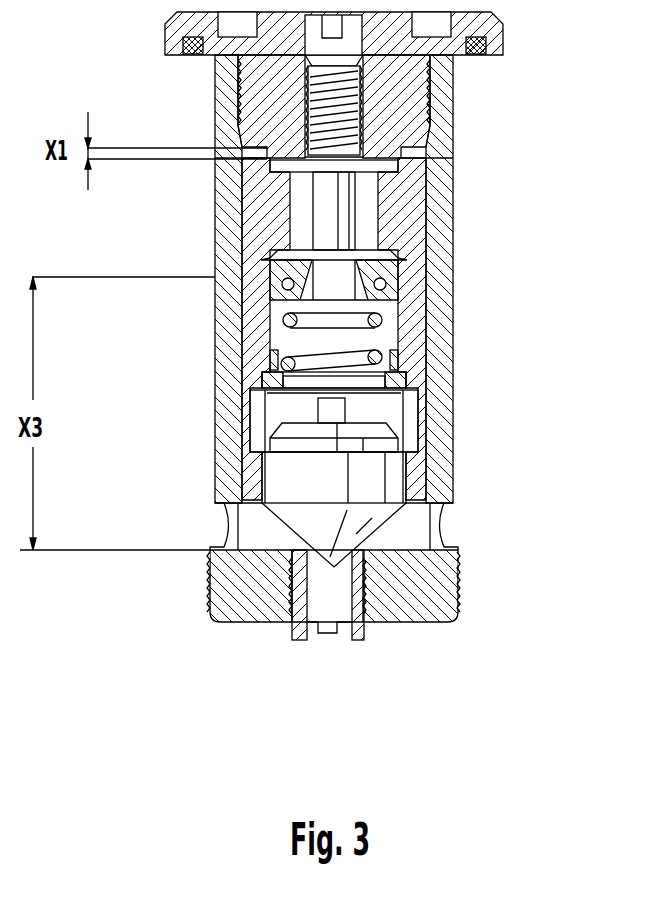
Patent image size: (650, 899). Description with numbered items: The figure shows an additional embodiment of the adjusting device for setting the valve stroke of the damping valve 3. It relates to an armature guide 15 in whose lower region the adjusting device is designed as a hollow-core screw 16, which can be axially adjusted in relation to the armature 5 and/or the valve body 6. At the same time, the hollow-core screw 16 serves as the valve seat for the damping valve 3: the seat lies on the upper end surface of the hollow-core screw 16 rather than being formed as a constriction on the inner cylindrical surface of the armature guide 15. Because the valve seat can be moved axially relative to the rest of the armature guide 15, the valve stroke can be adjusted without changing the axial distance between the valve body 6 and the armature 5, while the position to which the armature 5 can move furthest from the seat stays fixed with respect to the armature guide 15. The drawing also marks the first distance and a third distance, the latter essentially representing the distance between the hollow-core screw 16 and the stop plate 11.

The damping valve 3 is at (306, 362).
The armature 5 is at (407, 192).
The valve body 6 is at (372, 475).
The stop plate 11 is at (393, 257).
The armature guide 15 is at (440, 283).
The hollow-core screw 16 is at (352, 641).